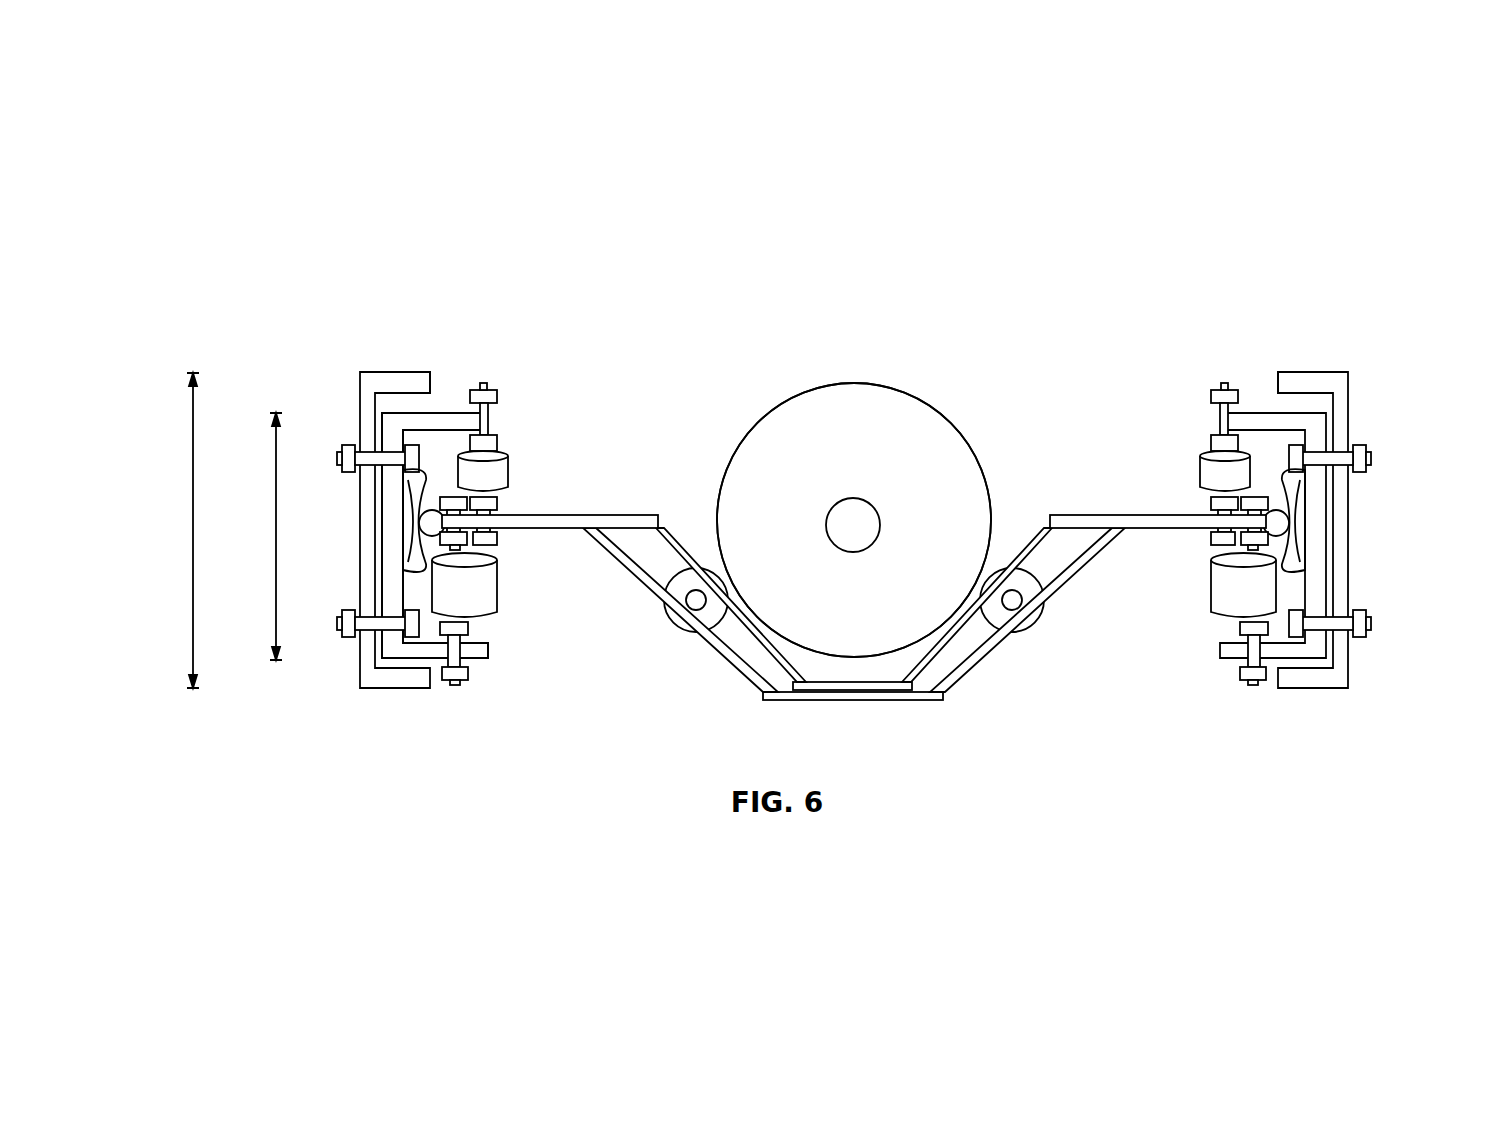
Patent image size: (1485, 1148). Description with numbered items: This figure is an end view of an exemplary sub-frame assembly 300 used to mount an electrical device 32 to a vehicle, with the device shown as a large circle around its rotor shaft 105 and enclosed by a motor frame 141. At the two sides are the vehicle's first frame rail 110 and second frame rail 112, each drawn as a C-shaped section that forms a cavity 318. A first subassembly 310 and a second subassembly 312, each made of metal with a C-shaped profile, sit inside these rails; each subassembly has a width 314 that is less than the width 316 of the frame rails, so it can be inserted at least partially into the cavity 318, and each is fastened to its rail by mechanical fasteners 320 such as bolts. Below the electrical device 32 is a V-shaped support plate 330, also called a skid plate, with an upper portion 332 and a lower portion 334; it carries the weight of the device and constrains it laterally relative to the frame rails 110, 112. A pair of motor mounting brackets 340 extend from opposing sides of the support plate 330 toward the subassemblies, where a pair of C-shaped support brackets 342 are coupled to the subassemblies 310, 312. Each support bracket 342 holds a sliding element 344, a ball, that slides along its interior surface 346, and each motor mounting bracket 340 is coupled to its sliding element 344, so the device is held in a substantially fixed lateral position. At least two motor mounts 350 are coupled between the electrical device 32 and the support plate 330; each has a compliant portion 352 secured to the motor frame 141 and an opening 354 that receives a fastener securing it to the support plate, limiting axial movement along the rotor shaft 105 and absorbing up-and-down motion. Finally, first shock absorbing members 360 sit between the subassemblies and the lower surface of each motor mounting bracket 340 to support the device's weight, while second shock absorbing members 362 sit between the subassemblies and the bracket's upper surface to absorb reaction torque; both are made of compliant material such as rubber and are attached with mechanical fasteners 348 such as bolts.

The sub-frame assembly 300 is at (405, 271).
The electrical device 32 is at (935, 422).
The rotor shaft 105 is at (853, 498).
The motor frame 141 is at (977, 457).
The first frame rail 110 is at (400, 380).
The second frame rail 112 is at (1308, 380).
The first subassembly 310 is at (398, 653).
The second subassembly 312 is at (1313, 653).
The width 314 is at (276, 546).
The width 316 is at (193, 512).
The cavity 318 is at (427, 398).
The mechanical fasteners 320 is at (342, 452).
The support plate 330 is at (737, 660).
The upper portion 332 is at (670, 533).
The lower portion 334 is at (622, 563).
The motor mounting bracket 340 is at (588, 515).
The support bracket 342 is at (408, 560).
The sliding element 344 is at (421, 523).
The interior surface 346 is at (412, 548).
The mechanical fasteners 348 is at (497, 400).
The motor mount 350 is at (672, 626).
The compliant portion 352 is at (995, 617).
The opening 354 is at (1042, 607).
The first shock absorbing member 360 is at (498, 598).
The second shock absorbing member 362 is at (512, 472).